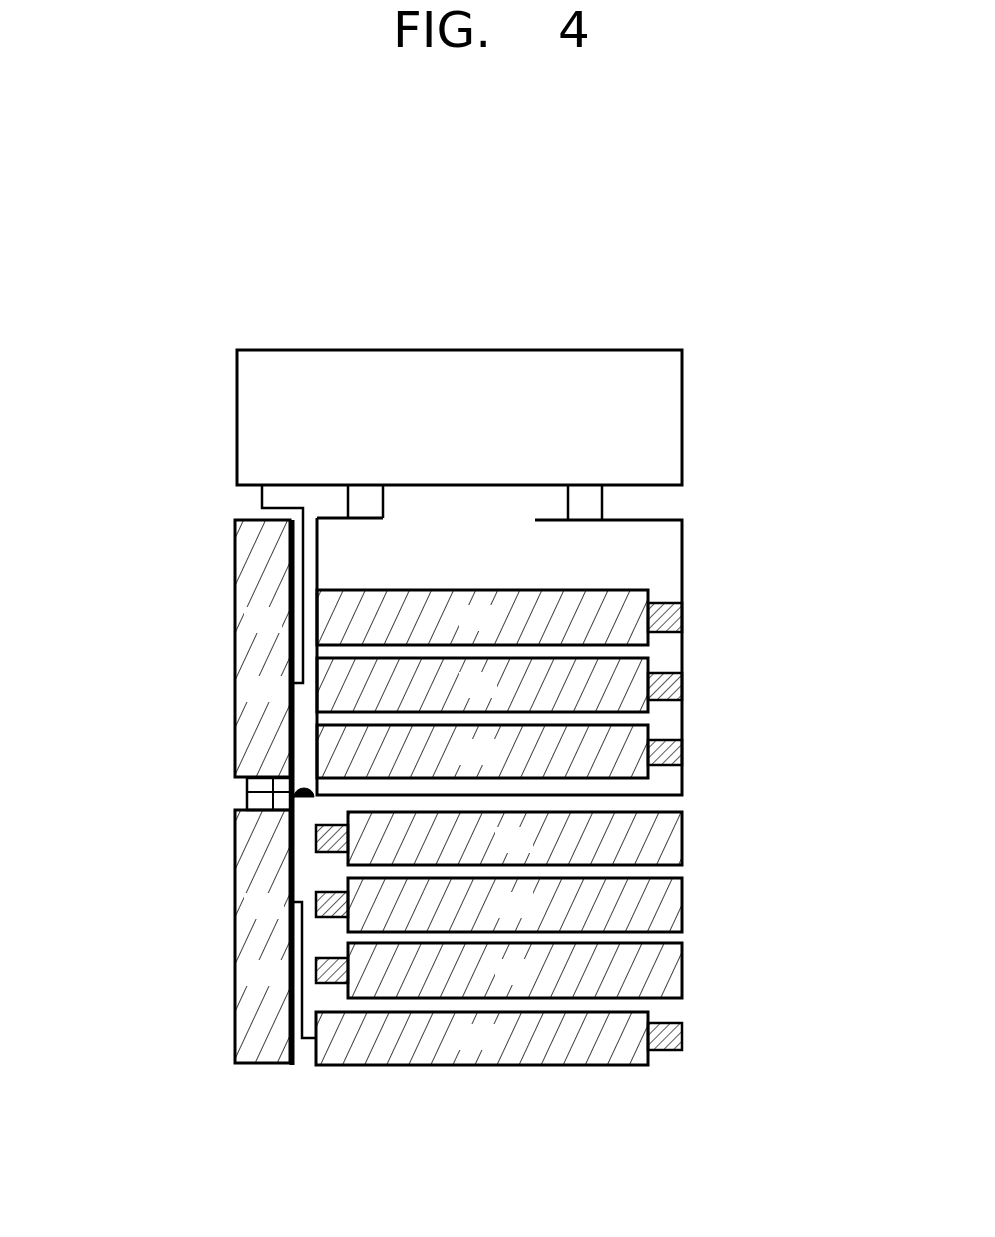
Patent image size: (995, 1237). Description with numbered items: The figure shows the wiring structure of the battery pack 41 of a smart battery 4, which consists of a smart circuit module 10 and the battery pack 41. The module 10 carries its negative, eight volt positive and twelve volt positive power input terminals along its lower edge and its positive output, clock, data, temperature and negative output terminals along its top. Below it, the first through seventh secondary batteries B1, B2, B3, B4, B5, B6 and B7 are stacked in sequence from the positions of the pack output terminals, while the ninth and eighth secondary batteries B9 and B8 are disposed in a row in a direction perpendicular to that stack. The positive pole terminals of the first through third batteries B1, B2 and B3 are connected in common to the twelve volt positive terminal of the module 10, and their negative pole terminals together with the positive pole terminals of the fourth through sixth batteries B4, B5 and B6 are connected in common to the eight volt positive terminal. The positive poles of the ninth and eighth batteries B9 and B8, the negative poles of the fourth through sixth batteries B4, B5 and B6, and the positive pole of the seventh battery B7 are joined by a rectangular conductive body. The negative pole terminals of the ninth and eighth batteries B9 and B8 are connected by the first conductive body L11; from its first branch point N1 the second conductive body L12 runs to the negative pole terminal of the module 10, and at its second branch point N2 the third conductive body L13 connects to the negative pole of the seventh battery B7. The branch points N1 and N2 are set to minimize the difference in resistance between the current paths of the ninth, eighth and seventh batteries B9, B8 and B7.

The smart battery 4 is at (707, 317).
The smart circuit module 10 is at (237, 418).
The battery pack 41 is at (148, 738).
The first conductive body L11 is at (248, 790).
The second conductive body L12 is at (262, 497).
The third conductive body L13 is at (302, 1000).
The first secondary battery B1 is at (499, 617).
The second secondary battery B2 is at (499, 685).
The third secondary battery B3 is at (499, 751).
The fourth secondary battery B4 is at (499, 838).
The fifth secondary battery B5 is at (499, 905).
The sixth secondary battery B6 is at (499, 970).
The seventh secondary battery B7 is at (499, 1038).
The eighth secondary battery B8 is at (262, 936).
The ninth secondary battery B9 is at (262, 648).
The first branch point N1 is at (264, 688).
The second branch point N2 is at (264, 905).